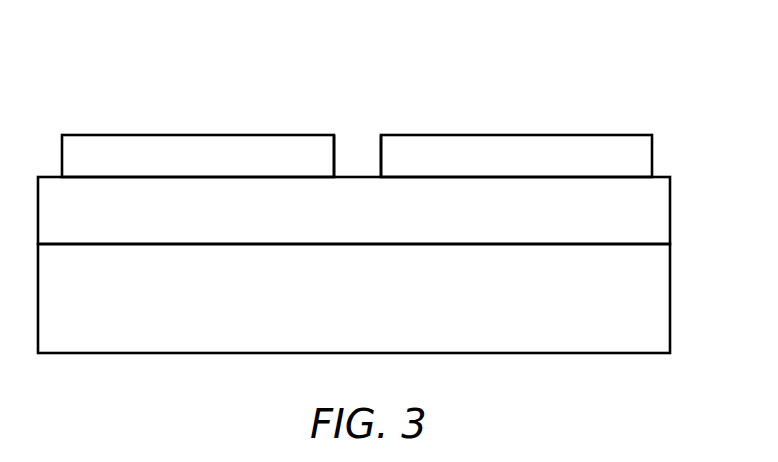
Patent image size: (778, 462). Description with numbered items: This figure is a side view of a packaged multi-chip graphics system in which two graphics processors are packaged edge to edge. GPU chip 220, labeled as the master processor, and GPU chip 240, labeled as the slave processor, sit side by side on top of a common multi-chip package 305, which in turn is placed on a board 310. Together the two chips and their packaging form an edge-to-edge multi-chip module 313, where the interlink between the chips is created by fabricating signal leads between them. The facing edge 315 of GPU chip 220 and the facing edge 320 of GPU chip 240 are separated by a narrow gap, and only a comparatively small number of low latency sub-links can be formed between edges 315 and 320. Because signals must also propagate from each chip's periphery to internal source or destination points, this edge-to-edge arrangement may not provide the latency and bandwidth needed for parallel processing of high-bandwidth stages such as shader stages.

The GPU chip 220 is at (189, 131).
The GPU chip 240 is at (534, 135).
The common multi-chip package 305 is at (530, 222).
The board 310 is at (530, 307).
The edge-to-edge multi-chip module 313 is at (514, 30).
The edge 315 is at (392, 122).
The edge 320 is at (412, 137).